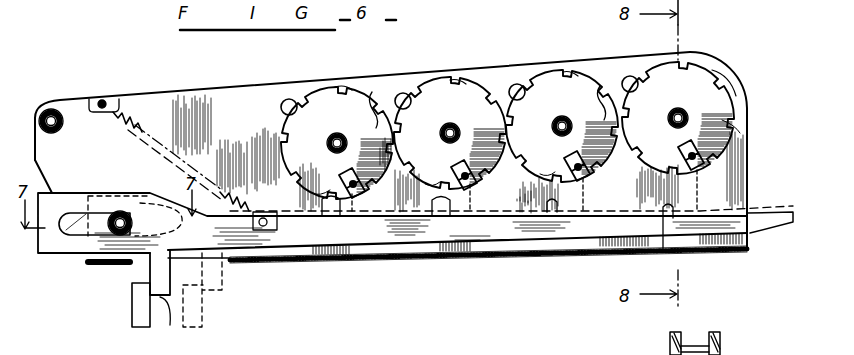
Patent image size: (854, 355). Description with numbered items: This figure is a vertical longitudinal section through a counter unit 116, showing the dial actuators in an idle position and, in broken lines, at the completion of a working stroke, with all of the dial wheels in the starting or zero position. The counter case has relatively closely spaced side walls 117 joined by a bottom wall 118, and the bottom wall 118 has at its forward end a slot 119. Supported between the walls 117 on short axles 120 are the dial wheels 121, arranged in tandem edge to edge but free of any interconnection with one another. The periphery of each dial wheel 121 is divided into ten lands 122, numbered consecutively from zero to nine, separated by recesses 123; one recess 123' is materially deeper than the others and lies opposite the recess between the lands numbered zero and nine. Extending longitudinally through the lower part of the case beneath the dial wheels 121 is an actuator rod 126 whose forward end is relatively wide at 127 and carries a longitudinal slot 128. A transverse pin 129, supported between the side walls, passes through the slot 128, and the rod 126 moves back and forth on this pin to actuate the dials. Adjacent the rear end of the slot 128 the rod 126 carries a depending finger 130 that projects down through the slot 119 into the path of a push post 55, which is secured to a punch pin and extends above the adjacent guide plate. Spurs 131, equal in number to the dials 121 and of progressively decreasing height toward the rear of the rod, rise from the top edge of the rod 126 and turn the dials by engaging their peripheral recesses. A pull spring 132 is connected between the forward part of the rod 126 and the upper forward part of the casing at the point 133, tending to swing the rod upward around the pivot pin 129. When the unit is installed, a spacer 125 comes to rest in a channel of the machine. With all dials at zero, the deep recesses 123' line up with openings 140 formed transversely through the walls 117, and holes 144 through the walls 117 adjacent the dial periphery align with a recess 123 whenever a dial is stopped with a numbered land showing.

The push post 55 is at (141, 321).
The counter unit 116 is at (522, 56).
The side wall 117 is at (254, 100).
The bottom wall 118 is at (560, 262).
The slot 119 is at (132, 266).
The short axle 120 is at (345, 131).
The dial wheel 121 is at (370, 92).
The land 122 is at (322, 84).
The recess 123 is at (510, 130).
The deep recess 123' is at (521, 152).
The spacer 125 is at (54, 108).
The actuator rod 126 is at (337, 252).
The wide forward end 127 is at (52, 246).
The longitudinal slot 128 is at (89, 232).
The transverse pin 129 is at (118, 210).
The depending finger 130 is at (240, 289).
The spur 131 is at (356, 212).
The pull spring 132 is at (233, 192).
The point 133 is at (106, 98).
The opening 140 is at (372, 192).
The hole 144 is at (289, 98).